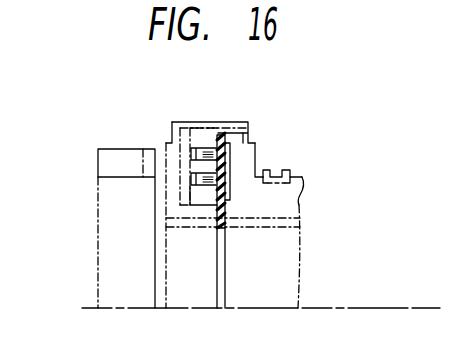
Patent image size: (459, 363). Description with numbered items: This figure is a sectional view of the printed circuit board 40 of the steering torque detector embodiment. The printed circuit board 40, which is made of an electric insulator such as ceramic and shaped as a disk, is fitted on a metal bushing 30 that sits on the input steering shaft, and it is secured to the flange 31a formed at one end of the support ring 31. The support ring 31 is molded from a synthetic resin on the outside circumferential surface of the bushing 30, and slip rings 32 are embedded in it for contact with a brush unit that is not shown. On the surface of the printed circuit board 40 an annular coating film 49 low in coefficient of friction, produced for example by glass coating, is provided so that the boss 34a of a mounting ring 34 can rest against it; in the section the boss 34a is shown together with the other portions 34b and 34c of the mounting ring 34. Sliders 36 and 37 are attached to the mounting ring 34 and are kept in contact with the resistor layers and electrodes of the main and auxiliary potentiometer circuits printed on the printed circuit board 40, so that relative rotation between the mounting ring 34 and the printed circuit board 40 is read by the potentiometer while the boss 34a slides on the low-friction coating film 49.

The bushing 30 is at (292, 228).
The support ring 31 is at (288, 201).
The flange 31a is at (251, 145).
The slip rings 32 is at (284, 170).
The mounting ring 34 is at (178, 120).
The boss 34a is at (178, 208).
The side wall of clamping assembly 34b is at (178, 140).
The block of clamping assembly 34c is at (98, 162).
The slider 36 is at (205, 136).
The slider 37 is at (200, 187).
The printed circuit board 40 is at (219, 134).
The coating film 49 is at (216, 212).